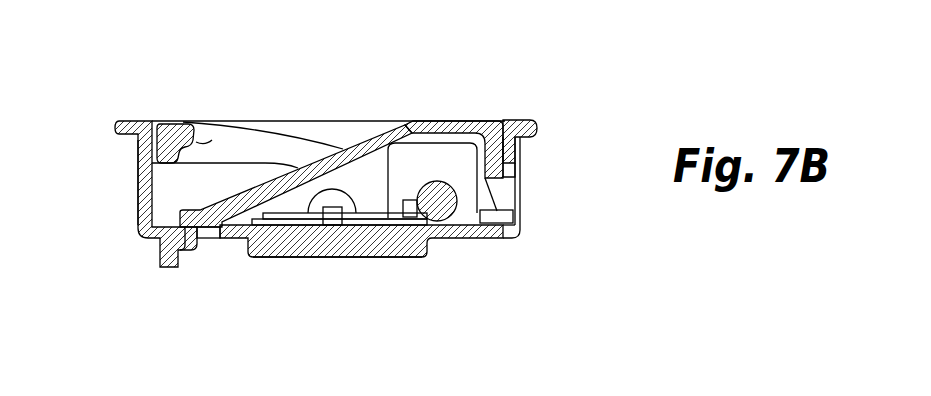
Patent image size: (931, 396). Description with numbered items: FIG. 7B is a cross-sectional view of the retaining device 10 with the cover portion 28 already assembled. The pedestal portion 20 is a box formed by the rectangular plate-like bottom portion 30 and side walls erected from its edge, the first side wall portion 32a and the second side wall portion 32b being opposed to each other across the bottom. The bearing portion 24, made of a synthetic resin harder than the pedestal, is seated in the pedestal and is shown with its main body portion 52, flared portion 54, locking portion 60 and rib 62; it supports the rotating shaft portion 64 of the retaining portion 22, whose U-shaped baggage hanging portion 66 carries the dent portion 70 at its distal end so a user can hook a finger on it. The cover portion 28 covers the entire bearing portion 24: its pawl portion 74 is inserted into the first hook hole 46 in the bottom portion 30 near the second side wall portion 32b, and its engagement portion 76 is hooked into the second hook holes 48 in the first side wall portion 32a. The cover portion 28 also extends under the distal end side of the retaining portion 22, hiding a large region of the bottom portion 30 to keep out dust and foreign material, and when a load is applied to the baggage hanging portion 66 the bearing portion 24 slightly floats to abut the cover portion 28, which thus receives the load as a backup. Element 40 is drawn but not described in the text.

The retaining device 10 is at (322, 291).
The pedestal portion 20 is at (125, 116).
The retaining portion 22 is at (276, 121).
The bearing portion 24 is at (426, 136).
The cover portion 28 is at (382, 128).
The bottom portion 30 is at (263, 258).
The first side wall portion 32a is at (510, 137).
The second side wall portion 32b is at (137, 167).
The sensor 40 is at (333, 206).
The first hook hole 46 is at (205, 236).
The second hook holes 48 is at (513, 153).
The main body portion 52 is at (379, 174).
The flared portion 54 is at (286, 223).
The locking portion 60 is at (494, 216).
The rib 62 is at (482, 208).
The rotating shaft portion 64 is at (440, 206).
The baggage hanging portion 66 is at (158, 124).
The dent portion 70 is at (183, 150).
The pawl portion 74 is at (183, 251).
The engagement portion 76 is at (514, 177).